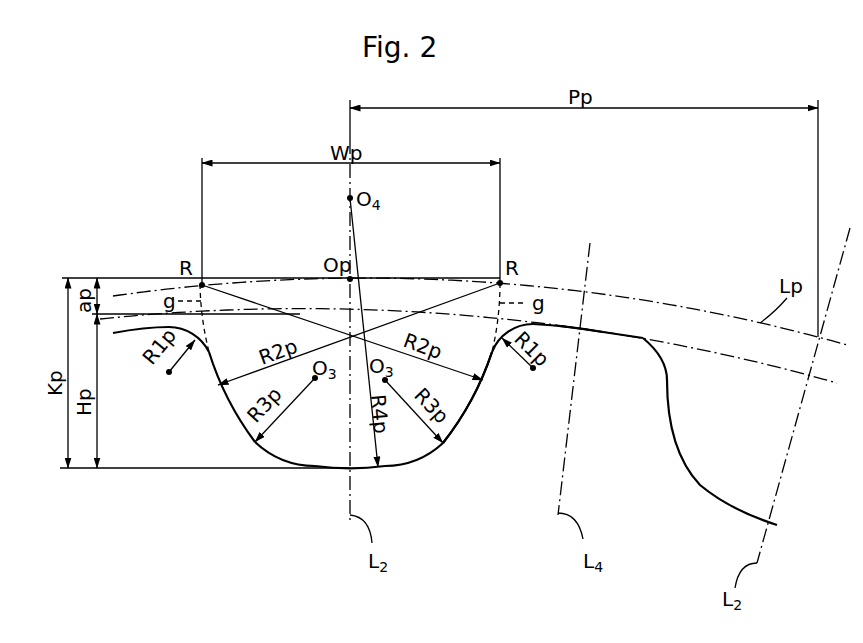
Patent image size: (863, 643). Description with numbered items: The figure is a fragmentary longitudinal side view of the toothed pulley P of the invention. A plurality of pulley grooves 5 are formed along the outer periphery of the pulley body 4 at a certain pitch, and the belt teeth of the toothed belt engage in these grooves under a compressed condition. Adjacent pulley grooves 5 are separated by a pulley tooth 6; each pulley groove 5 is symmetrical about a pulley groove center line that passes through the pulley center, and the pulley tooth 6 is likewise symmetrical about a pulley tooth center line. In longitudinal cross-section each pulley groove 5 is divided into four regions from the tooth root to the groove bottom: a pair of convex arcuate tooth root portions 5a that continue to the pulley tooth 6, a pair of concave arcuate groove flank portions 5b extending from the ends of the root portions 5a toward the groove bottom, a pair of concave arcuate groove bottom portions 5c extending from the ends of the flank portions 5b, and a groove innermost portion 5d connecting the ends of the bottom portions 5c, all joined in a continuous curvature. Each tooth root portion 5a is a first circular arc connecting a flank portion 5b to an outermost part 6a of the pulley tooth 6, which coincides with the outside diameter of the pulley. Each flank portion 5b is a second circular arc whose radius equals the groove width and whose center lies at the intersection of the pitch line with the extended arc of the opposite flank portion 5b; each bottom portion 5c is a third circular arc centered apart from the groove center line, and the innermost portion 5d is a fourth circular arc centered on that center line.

The toothed pulley P is at (148, 118).
The pulley body 4 is at (520, 445).
The pulley groove 5 is at (452, 424).
The convex arcuate tooth root portion 5a is at (197, 358).
The concave arcuate groove flank portion 5b is at (201, 363).
The concave arcuate groove bottom portion 5c is at (303, 477).
The groove innermost portion 5d is at (350, 481).
The pulley tooth 6 is at (122, 334).
The outermost part of the pulley tooth 6a is at (597, 333).